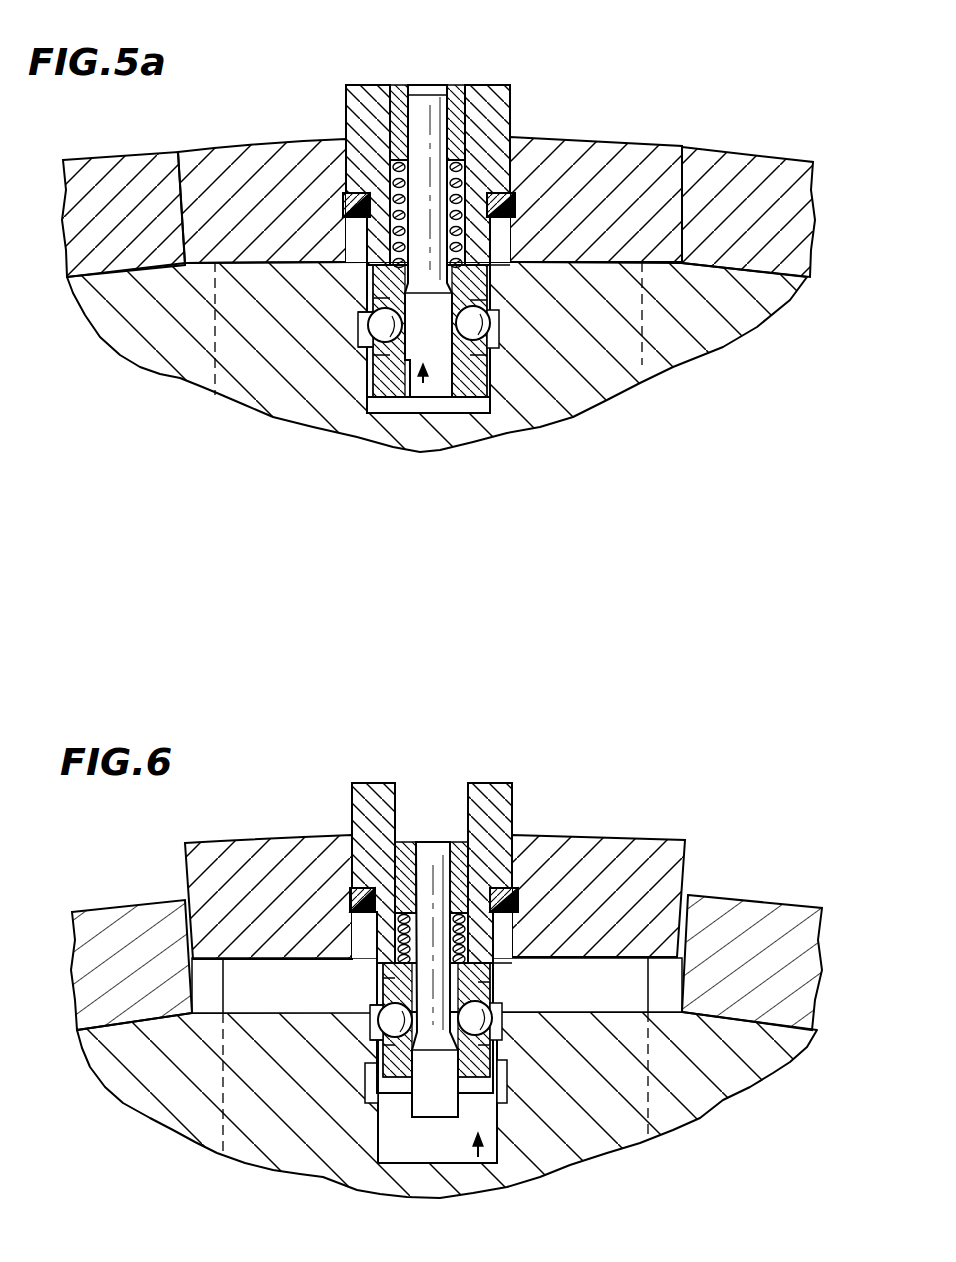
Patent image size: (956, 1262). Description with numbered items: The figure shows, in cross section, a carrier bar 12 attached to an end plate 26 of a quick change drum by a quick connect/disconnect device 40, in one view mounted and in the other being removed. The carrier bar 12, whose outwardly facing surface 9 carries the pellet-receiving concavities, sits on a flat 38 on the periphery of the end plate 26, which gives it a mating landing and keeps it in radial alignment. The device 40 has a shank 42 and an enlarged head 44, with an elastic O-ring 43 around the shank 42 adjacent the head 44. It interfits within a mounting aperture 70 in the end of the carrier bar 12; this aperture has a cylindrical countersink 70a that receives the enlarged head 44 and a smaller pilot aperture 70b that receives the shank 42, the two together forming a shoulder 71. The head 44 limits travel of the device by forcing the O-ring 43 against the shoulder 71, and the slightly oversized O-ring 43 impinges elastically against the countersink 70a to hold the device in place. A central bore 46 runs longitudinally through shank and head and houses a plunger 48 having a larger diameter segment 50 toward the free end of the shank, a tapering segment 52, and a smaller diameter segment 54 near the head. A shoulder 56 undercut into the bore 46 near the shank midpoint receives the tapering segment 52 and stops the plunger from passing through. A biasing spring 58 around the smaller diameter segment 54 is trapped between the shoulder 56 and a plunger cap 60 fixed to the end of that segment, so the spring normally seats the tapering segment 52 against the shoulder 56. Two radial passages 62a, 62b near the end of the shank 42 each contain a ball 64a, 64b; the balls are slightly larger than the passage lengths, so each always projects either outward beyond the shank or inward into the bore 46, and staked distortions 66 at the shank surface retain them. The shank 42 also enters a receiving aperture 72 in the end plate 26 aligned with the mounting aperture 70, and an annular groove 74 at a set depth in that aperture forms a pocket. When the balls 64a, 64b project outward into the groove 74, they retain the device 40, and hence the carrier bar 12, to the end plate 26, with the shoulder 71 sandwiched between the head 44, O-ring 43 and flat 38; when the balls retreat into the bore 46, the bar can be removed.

In FIG. 5A, the outwardly facing surface 9 is at (135, 158).
In FIG. 6, the outwardly facing surface 9 is at (133, 900).
In FIG. 5A, the carrier bar 12 is at (217, 150).
In FIG. 6, the carrier bar 12 is at (216, 843).
In FIG. 5A, the end plate 26 is at (228, 390).
In FIG. 6, the end plate 26 is at (752, 1062).
In FIG. 5A, the flat 38 is at (228, 270).
In FIG. 6, the flat 38 is at (208, 1018).
In FIG. 5A, the quick connect/disconnect device 40 is at (570, 70).
In FIG. 6, the quick connect/disconnect device 40 is at (318, 786).
In FIG. 5A, the shank 42 is at (505, 254).
In FIG. 6, the shank 42 is at (497, 1103).
In FIG. 5A, the O-ring 43 is at (388, 182).
In FIG. 6, the O-ring 43 is at (350, 892).
In FIG. 5A, the enlarged head 44 is at (388, 52).
In FIG. 5A, the central bore 46 is at (438, 400).
In FIG. 6, the central bore 46 is at (445, 800).
In FIG. 5A, the plunger 48 is at (424, 390).
In FIG. 6, the plunger 48 is at (479, 1158).
In FIG. 5A, the larger diameter segment 50 is at (481, 414).
In FIG. 6, the larger diameter segment 50 is at (437, 1094).
In FIG. 5A, the tapering segment 52 is at (470, 288).
In FIG. 6, the tapering segment 52 is at (491, 1030).
In FIG. 5A, the smaller diameter segment 54 is at (410, 216).
In FIG. 6, the smaller diameter segment 54 is at (396, 930).
In FIG. 5A, the shoulder 56 is at (410, 265).
In FIG. 6, the shoulder 56 is at (494, 973).
In FIG. 5A, the biasing spring 58 is at (392, 163).
In FIG. 6, the biasing spring 58 is at (376, 912).
In FIG. 5A, the plunger cap 60 is at (455, 85).
In FIG. 6, the plunger cap 60 is at (404, 840).
In FIG. 5A, the passage 62a is at (488, 392).
In FIG. 6, the passage 62a is at (493, 1074).
In FIG. 5A, the passage 62b is at (386, 400).
In FIG. 6, the passage 62b is at (384, 1086).
In FIG. 5A, the ball 64a is at (482, 323).
In FIG. 6, the ball 64a is at (490, 1024).
In FIG. 5A, the ball 64b is at (374, 337).
In FIG. 6, the ball 64b is at (380, 1020).
In FIG. 5A, the distortions 66 is at (372, 298).
In FIG. 6, the distortions 66 is at (378, 979).
In FIG. 5A, the mounting aperture 70 is at (522, 118).
In FIG. 6, the mounting aperture 70 is at (518, 810).
In FIG. 5A, the cylindrical countersink 70a is at (514, 136).
In FIG. 6, the cylindrical countersink 70a is at (516, 830).
In FIG. 5A, the pilot aperture 70b is at (499, 230).
In FIG. 6, the pilot aperture 70b is at (508, 944).
In FIG. 5A, the shoulder 71 is at (496, 250).
In FIG. 6, the shoulder 71 is at (516, 950).
In FIG. 5A, the receiving aperture 72 is at (398, 418).
In FIG. 6, the receiving aperture 72 is at (380, 1124).
In FIG. 5A, the annular groove 74 is at (376, 330).
In FIG. 6, the annular groove 74 is at (378, 1088).